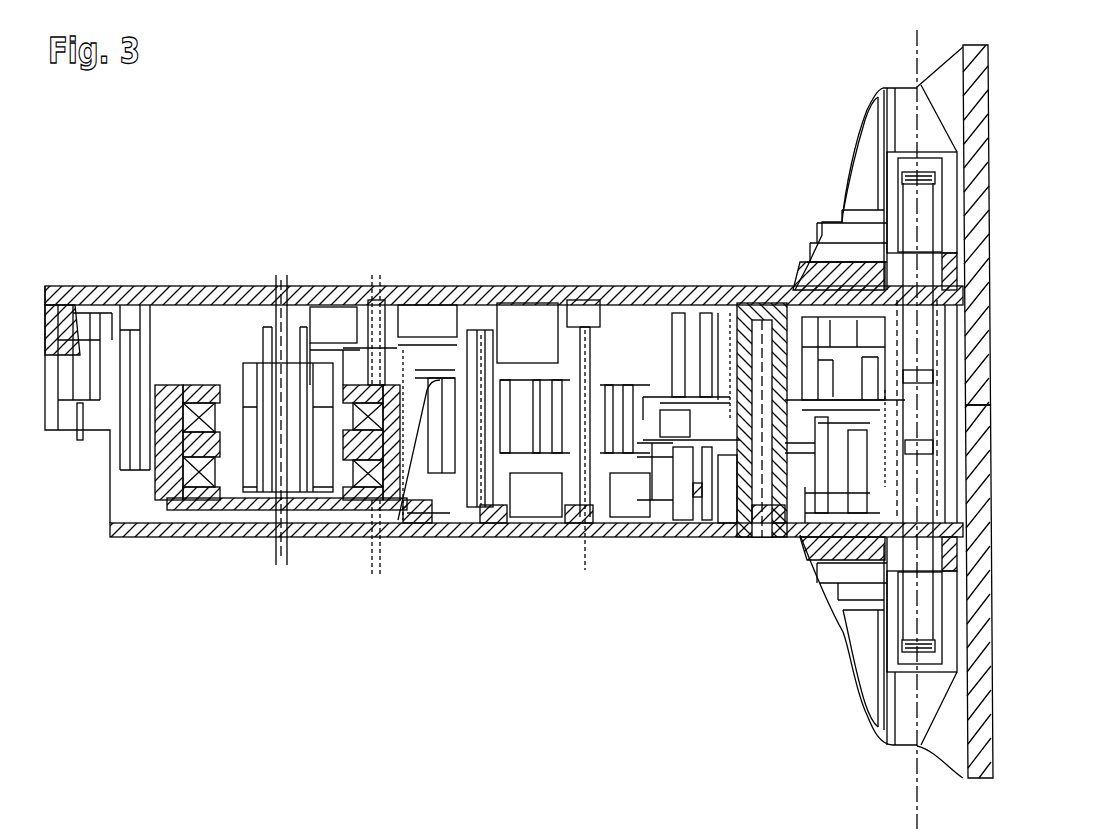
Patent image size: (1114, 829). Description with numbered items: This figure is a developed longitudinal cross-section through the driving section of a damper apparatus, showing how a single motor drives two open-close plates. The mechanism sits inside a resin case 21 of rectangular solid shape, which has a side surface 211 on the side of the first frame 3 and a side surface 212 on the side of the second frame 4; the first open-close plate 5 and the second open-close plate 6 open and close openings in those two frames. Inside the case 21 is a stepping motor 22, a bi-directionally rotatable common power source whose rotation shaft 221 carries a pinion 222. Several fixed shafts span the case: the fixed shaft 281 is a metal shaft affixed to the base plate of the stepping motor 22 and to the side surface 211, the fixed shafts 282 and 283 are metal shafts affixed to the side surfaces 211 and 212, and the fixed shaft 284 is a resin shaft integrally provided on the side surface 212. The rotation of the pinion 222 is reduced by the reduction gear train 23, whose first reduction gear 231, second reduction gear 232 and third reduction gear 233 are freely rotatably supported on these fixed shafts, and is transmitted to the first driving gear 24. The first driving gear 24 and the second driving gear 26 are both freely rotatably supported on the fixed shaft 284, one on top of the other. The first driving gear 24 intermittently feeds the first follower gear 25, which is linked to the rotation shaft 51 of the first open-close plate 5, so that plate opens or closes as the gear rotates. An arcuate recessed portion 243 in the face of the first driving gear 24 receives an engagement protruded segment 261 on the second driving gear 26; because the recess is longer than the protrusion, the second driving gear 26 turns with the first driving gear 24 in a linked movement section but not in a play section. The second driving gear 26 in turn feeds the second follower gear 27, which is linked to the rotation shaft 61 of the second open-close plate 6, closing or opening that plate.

The first frame 3 is at (988, 107).
The second frame 4 is at (993, 716).
The first open-close plate 5 is at (857, 165).
The second open-close plate 6 is at (855, 652).
The case 21 is at (127, 286).
The stepping motor 22 is at (205, 500).
The reduction gear train 23 is at (626, 200).
The first driving gear 24 is at (695, 286).
The first follower gear 25 is at (927, 398).
The second driving gear 26 is at (680, 540).
The second follower gear 27 is at (943, 487).
The rotation shaft of the first open-close plate 51 is at (925, 220).
The rotation shaft of the second open-close plate 61 is at (920, 602).
The side surface 211 is at (750, 286).
The side surface 212 is at (713, 540).
The rotation shaft of the stepping motor 221 is at (263, 540).
The pinion 222 is at (283, 286).
The first reduction gear 231 is at (370, 286).
The second reduction gear 232 is at (463, 330).
The third reduction gear 233 is at (633, 303).
The arcuate recessed portion 243 is at (847, 430).
The engagement protruded segment 261 is at (845, 435).
The fixed shaft 281 is at (400, 523).
The fixed shaft 282 is at (465, 537).
The fixed shaft 283 is at (568, 540).
The fixed shaft 284 is at (765, 540).